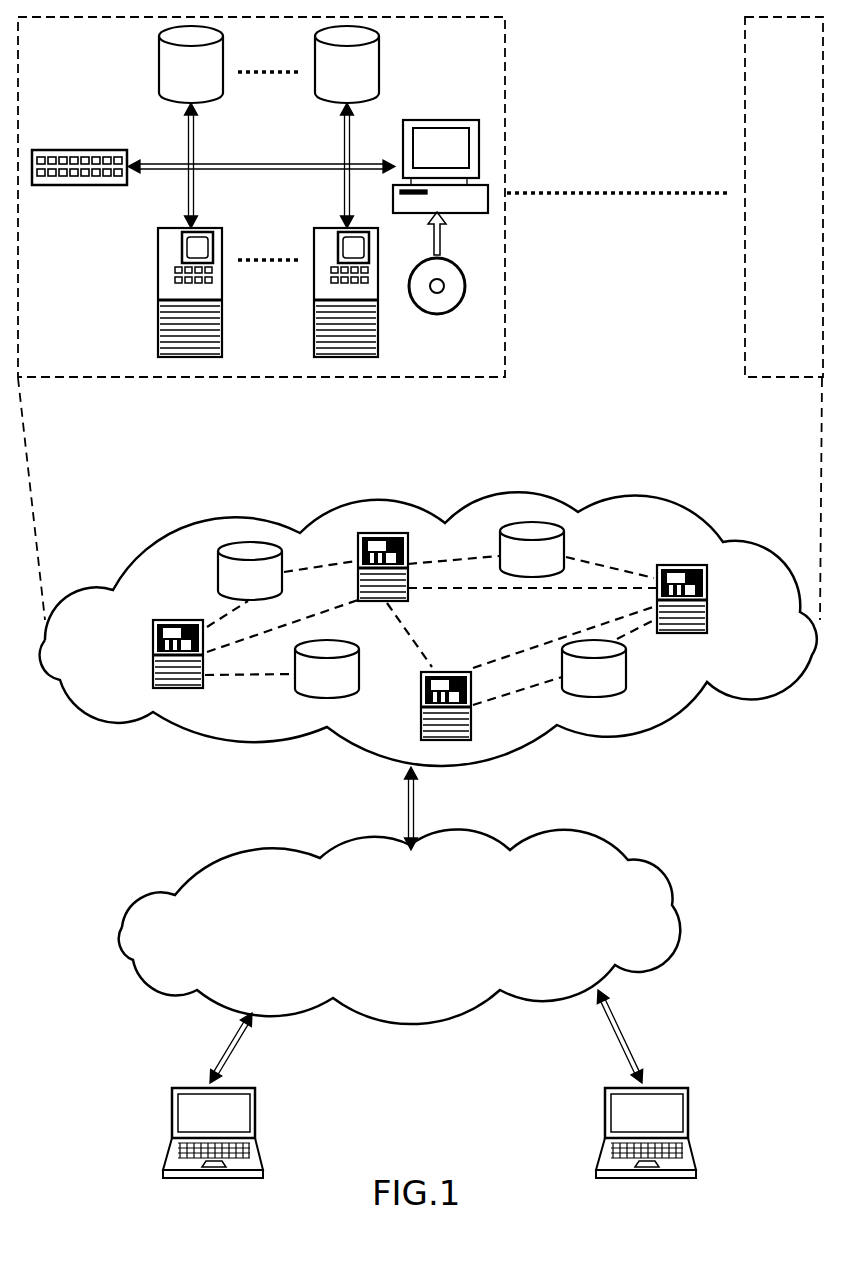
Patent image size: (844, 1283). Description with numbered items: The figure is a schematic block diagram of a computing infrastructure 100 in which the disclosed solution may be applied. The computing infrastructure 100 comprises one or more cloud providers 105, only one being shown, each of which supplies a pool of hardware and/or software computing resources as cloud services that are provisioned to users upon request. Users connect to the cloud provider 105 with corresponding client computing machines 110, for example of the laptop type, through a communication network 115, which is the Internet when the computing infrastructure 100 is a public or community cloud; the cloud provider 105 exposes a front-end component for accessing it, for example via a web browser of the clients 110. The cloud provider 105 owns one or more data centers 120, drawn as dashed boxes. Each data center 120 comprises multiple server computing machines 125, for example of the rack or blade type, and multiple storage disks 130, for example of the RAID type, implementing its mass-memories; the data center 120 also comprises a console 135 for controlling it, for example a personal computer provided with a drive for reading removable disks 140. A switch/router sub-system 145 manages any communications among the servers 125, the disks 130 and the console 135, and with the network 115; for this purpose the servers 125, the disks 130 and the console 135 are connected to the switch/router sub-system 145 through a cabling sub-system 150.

The computing infrastructure 100 is at (105, 817).
The cloud provider 105 is at (232, 524).
The client computing machine 110 is at (173, 1121).
The communication network 115 is at (360, 838).
The data center 120 is at (298, 378).
The server computing machine 125 is at (158, 320).
The storage disk 130 is at (158, 82).
The console 135 is at (413, 120).
The removable disk 140 is at (418, 311).
The switch/router sub-system 145 is at (57, 186).
The cabling sub-system 150 is at (262, 170).